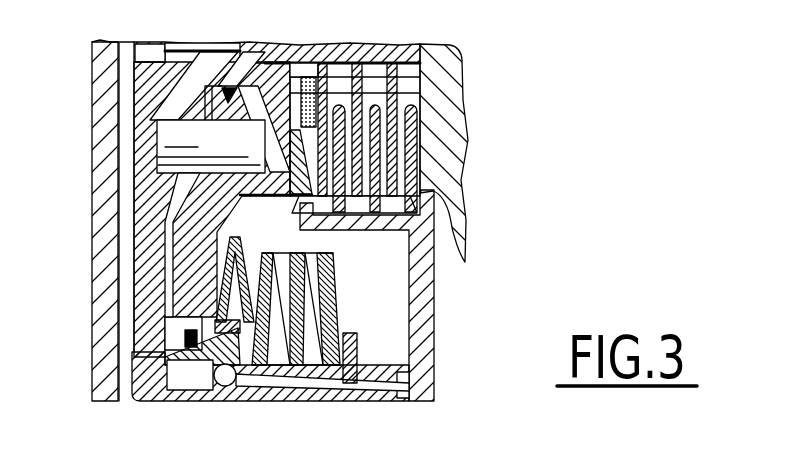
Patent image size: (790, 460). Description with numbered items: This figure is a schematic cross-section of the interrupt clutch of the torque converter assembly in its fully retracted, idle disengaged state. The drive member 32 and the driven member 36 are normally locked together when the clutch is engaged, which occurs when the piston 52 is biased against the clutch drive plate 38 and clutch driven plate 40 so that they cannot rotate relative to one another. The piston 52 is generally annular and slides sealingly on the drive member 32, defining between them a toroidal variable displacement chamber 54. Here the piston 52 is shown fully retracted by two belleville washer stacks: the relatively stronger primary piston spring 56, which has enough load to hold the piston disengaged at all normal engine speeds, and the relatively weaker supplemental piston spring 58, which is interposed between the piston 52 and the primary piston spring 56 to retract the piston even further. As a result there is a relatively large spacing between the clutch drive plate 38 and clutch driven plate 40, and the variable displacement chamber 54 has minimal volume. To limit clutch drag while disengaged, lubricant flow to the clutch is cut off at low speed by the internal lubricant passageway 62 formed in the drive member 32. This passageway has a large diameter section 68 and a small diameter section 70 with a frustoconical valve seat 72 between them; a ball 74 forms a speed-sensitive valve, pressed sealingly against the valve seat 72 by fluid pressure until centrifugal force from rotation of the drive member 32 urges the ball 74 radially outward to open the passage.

The drive member 32 is at (470, 64).
The driven member 36 is at (435, 357).
The clutch drive plate 38 is at (273, 62).
The clutch driven plate 40 is at (413, 133).
The piston 52 is at (188, 243).
The variable displacement chamber 54 is at (175, 204).
The primary piston spring 56 is at (335, 283).
The supplemental piston spring 58 is at (228, 276).
The internal lubricant passageway 62 is at (150, 397).
The large diameter section 68 is at (195, 383).
The small diameter section 70 is at (319, 399).
The frustoconical valve seat 72 is at (223, 388).
The ball 74 is at (241, 383).